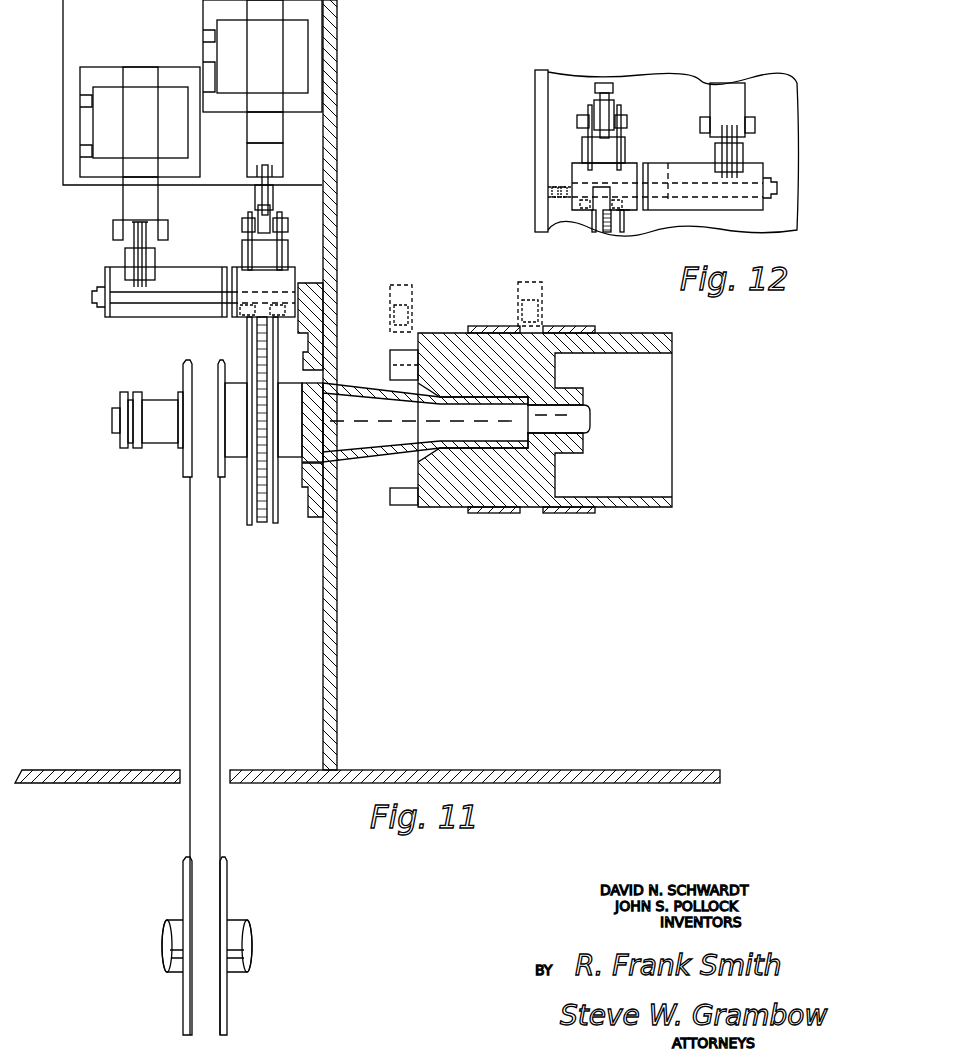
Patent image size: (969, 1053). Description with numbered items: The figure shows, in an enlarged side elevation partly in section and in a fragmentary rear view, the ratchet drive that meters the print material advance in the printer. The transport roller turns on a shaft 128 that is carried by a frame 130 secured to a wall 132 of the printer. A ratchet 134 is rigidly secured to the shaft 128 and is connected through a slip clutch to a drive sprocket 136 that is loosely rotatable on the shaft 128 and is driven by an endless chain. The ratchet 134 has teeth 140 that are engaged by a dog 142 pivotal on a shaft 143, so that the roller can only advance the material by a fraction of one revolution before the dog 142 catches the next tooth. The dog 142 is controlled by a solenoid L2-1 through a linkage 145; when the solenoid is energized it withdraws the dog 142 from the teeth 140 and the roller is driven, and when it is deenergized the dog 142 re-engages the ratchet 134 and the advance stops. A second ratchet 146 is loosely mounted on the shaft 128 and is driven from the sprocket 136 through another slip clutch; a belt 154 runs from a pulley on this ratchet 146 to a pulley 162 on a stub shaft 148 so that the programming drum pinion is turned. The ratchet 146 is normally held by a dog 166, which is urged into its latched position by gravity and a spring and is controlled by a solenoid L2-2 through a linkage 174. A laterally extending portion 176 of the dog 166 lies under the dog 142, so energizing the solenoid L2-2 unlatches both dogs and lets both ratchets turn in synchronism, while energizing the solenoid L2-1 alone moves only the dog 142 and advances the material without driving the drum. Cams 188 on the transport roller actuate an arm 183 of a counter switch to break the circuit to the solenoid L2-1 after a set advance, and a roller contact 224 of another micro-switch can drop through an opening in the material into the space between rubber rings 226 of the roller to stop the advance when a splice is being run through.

In FIG. 11, the solenoid L2-1 is at (300, 46).
In FIG. 12, the solenoid L2-1 is at (606, 84).
In FIG. 11, the solenoid L2-2 is at (82, 106).
In FIG. 12, the solenoid L2-2 is at (727, 84).
In FIG. 11, the transport roller shaft 128 is at (575, 420).
In FIG. 11, the frame 130 is at (452, 450).
In FIG. 11, the wall 132 is at (330, 161).
In FIG. 12, the wall 132 is at (533, 104).
In FIG. 11, the ratchet 134 is at (276, 524).
In FIG. 12, the ratchet 134 is at (592, 230).
In FIG. 11, the drive sprocket 136 is at (262, 524).
In FIG. 12, the drive sprocket 136 is at (606, 233).
In FIG. 11, the teeth 140 is at (300, 305).
In FIG. 12, the teeth 140 is at (575, 203).
In FIG. 11, the dog 142 is at (290, 282).
In FIG. 12, the dog 142 is at (580, 176).
In FIG. 11, the shaft 143 is at (134, 300).
In FIG. 12, the shaft 143 is at (668, 165).
In FIG. 11, the linkage 145 is at (244, 226).
In FIG. 11, the ratchet 146 is at (249, 524).
In FIG. 12, the ratchet 146 is at (622, 233).
In FIG. 11, the stub shaft 148 is at (240, 966).
In FIG. 11, the belt 154 is at (219, 614).
In FIG. 11, the pulley 162 is at (228, 904).
In FIG. 11, the dog 166 is at (172, 318).
In FIG. 12, the dog 166 is at (700, 212).
In FIG. 11, the linkage 174 is at (152, 240).
In FIG. 11, the laterally extending portion 176 is at (240, 318).
In FIG. 12, the laterally extending portion 176 is at (628, 220).
In FIG. 11, the arm 183 is at (408, 322).
In FIG. 11, the cams 188 is at (392, 366).
In FIG. 11, the roller contact 224 is at (548, 318).
In FIG. 11, the rubber rings 226 is at (558, 514).